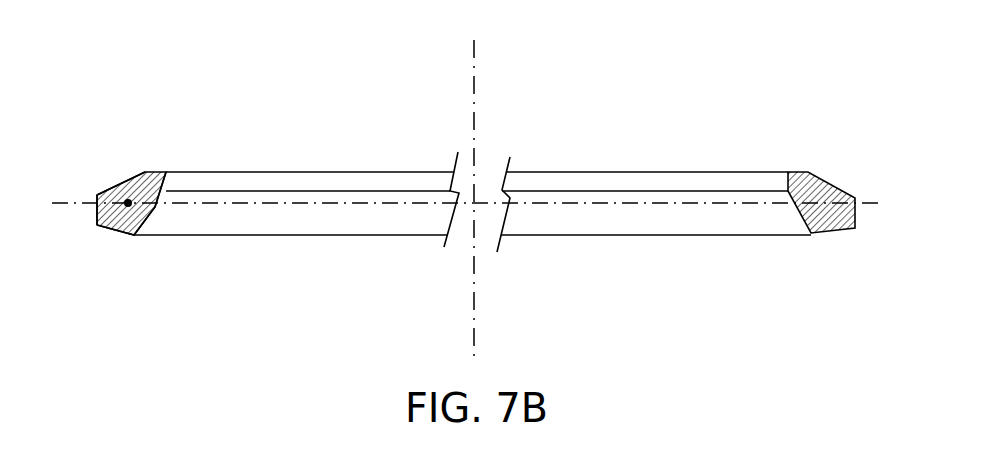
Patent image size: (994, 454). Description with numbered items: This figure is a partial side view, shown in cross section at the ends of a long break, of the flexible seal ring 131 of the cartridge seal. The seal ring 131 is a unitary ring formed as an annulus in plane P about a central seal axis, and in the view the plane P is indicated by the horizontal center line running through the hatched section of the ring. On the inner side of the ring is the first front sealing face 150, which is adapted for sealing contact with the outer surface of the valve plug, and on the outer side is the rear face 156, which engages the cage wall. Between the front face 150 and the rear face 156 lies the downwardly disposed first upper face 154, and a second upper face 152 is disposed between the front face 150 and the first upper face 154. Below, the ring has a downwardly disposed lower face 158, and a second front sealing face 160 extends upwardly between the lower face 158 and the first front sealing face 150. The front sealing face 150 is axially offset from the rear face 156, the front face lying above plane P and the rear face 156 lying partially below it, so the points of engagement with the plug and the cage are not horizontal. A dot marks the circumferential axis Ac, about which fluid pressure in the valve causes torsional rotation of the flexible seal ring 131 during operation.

The flexible seal ring 131 is at (262, 56).
The first front sealing face 150 is at (284, 182).
The second upper face 152 is at (162, 172).
The first upper face 154 is at (121, 190).
The rear face 156 is at (90, 217).
The lower face 158 is at (112, 230).
The second front sealing face 160 is at (300, 230).
The plane P is at (80, 200).
The circumferential axis Ac is at (150, 214).